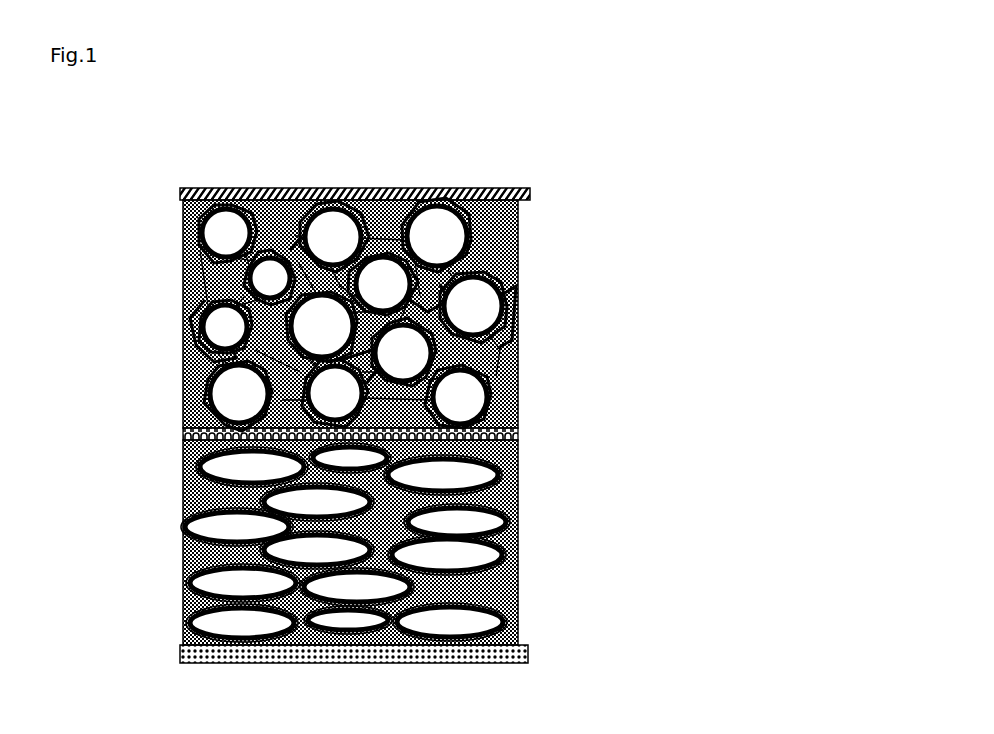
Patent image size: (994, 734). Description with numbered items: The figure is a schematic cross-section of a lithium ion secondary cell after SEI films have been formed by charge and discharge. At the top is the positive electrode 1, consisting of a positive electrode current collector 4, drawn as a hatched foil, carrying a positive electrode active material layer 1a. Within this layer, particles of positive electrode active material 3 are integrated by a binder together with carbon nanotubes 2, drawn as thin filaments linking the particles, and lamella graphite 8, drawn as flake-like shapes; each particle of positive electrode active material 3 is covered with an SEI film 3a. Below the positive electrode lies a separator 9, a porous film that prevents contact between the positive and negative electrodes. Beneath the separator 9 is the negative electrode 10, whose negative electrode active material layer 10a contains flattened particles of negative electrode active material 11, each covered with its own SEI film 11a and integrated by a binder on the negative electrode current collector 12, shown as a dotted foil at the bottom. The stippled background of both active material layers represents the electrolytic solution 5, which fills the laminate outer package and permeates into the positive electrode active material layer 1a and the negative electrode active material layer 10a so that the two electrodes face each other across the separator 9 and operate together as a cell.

The positive electrode 1 is at (495, 284).
The positive electrode active material layer 1a is at (515, 355).
The carbon nanotube 2 is at (468, 218).
The positive electrode active material 3 is at (445, 241).
The SEI film 3a is at (490, 385).
The positive electrode current collector 4 is at (333, 190).
The electrolytic solution 5 is at (513, 403).
The lamella graphite 8 is at (505, 337).
The separator 9 is at (183, 433).
The negative electrode 10 is at (497, 569).
The negative electrode active material layer 10a is at (513, 532).
The negative electrode active material 11 is at (487, 550).
The SEI film 11a is at (505, 575).
The negative electrode current collector 12 is at (513, 653).